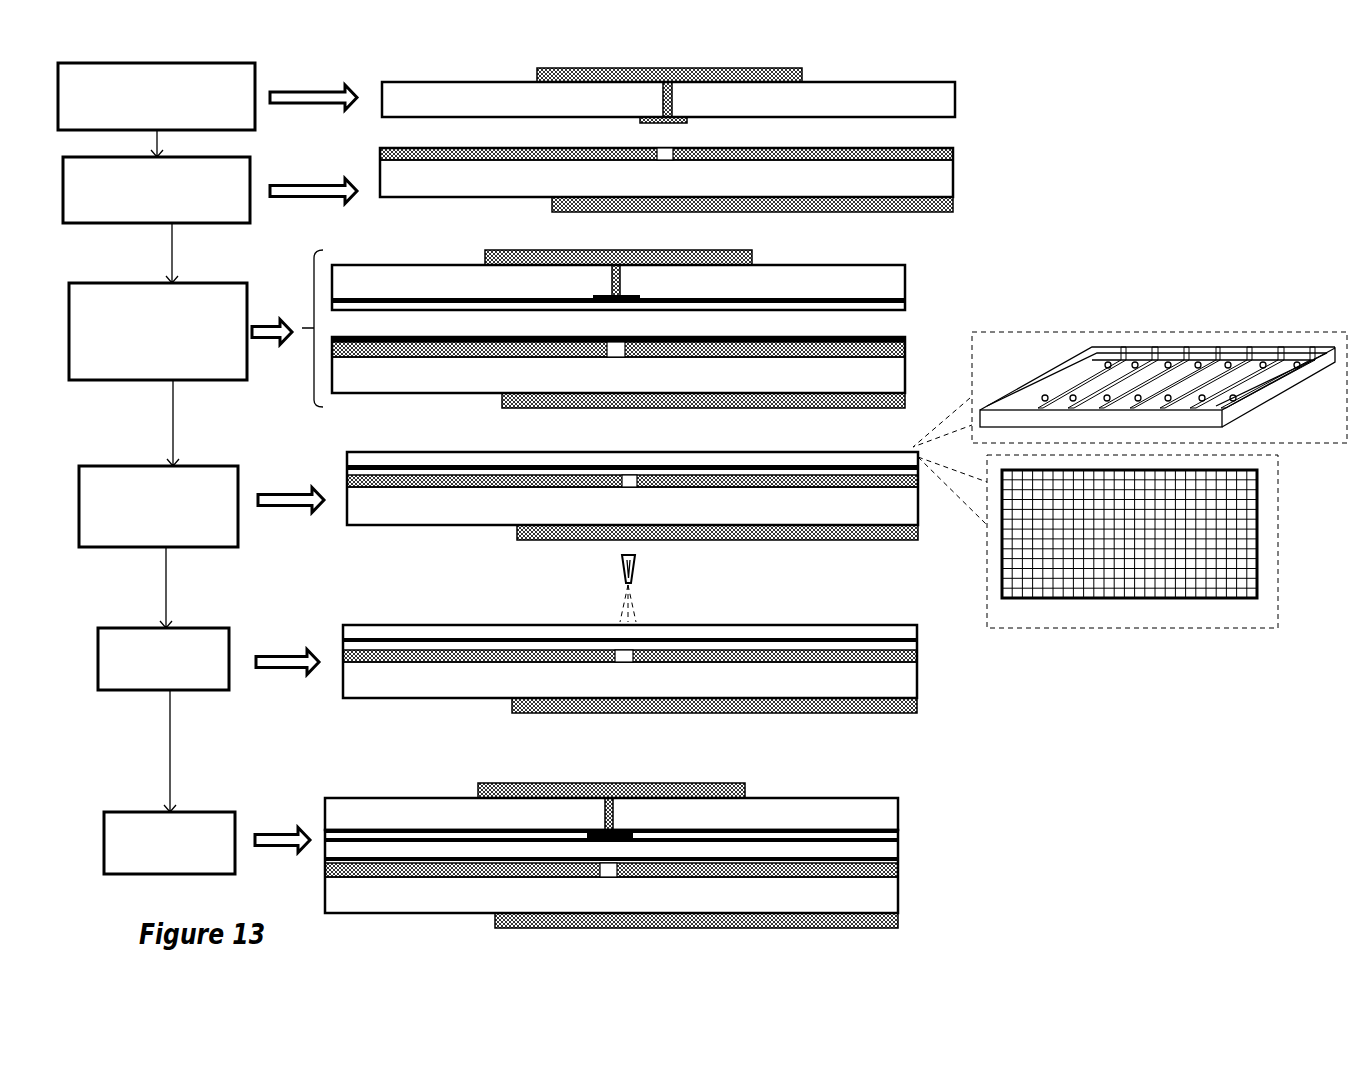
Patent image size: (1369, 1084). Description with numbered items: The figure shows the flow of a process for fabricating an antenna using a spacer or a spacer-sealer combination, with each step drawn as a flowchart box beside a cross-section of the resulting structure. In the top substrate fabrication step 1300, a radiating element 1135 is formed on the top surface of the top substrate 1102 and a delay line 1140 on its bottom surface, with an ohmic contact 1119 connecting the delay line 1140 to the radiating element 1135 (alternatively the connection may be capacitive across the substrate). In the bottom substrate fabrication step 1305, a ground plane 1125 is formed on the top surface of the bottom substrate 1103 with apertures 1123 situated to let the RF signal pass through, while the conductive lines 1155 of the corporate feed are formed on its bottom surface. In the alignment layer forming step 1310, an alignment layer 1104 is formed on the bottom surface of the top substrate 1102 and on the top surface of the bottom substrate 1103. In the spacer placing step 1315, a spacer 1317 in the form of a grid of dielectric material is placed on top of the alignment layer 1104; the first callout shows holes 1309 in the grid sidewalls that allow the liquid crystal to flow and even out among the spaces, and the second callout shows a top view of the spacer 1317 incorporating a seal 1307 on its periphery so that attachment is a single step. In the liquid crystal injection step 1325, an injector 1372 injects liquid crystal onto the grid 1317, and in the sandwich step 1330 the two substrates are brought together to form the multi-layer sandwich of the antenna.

The top substrate fabrication step 1300 is at (224, 118).
The bottom substrate fabrication step 1305 is at (207, 213).
The alignment layer forming step 1310 is at (207, 341).
The spacer placing step 1315 is at (186, 541).
The liquid crystal injection step 1325 is at (189, 681).
The sandwich step 1330 is at (193, 866).
The top substrate 1102 is at (475, 108).
The bottom substrate 1103 is at (462, 191).
The radiating element 1135 is at (545, 68).
The ohmic contact 1119 is at (672, 90).
The delay line 1140 is at (670, 123).
The alignment layer 1104 is at (905, 310).
The ground plane 1125 is at (782, 162).
The aperture 1123 is at (665, 162).
The conductive lines of the corporate feed 1155 is at (953, 212).
The injector 1372 is at (635, 573).
The holes 1309 is at (1107, 358).
The spacer 1317 is at (1160, 343).
The seal 1307 is at (1013, 600).